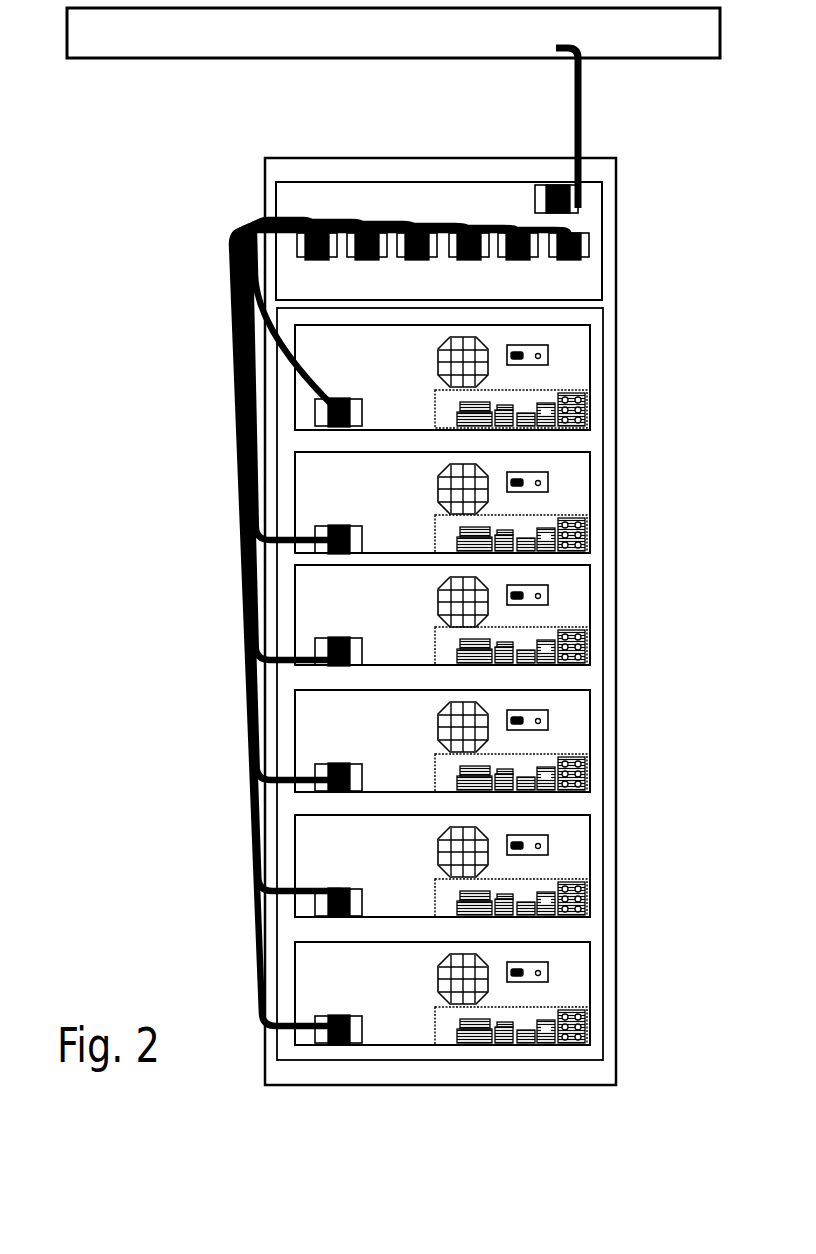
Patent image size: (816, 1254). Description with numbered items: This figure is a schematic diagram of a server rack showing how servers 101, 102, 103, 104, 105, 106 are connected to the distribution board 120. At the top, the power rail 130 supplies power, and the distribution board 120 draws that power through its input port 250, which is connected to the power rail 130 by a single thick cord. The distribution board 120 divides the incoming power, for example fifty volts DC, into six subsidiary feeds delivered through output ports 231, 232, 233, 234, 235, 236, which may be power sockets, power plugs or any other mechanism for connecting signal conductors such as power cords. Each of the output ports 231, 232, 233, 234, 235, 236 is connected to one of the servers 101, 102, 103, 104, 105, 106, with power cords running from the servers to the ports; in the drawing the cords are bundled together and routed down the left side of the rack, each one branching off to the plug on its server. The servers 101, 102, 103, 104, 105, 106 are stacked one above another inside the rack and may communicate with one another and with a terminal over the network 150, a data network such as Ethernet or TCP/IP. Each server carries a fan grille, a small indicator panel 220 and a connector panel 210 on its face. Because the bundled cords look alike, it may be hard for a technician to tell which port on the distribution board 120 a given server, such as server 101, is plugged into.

The power rail 130 is at (203, 58).
The network 150 is at (617, 561).
The distribution board 120 is at (603, 193).
The input port 250 is at (576, 200).
The output port 231 is at (290, 213).
The output port 232 is at (355, 217).
The output port 233 is at (418, 218).
The output port 234 is at (473, 223).
The output port 235 is at (517, 232).
The output port 236 is at (590, 245).
The server 101 is at (328, 349).
The server 102 is at (328, 476).
The server 103 is at (328, 589).
The server 104 is at (328, 714).
The server 105 is at (328, 839).
The server 106 is at (328, 966).
The power switch/indicator 220 is at (548, 346).
The connector panel 210 is at (550, 389).